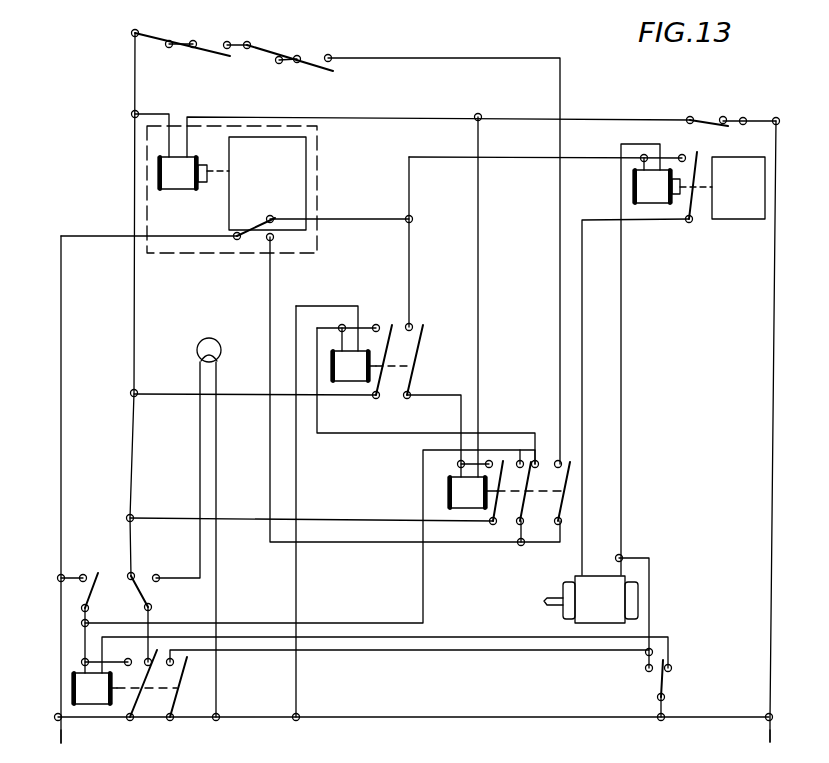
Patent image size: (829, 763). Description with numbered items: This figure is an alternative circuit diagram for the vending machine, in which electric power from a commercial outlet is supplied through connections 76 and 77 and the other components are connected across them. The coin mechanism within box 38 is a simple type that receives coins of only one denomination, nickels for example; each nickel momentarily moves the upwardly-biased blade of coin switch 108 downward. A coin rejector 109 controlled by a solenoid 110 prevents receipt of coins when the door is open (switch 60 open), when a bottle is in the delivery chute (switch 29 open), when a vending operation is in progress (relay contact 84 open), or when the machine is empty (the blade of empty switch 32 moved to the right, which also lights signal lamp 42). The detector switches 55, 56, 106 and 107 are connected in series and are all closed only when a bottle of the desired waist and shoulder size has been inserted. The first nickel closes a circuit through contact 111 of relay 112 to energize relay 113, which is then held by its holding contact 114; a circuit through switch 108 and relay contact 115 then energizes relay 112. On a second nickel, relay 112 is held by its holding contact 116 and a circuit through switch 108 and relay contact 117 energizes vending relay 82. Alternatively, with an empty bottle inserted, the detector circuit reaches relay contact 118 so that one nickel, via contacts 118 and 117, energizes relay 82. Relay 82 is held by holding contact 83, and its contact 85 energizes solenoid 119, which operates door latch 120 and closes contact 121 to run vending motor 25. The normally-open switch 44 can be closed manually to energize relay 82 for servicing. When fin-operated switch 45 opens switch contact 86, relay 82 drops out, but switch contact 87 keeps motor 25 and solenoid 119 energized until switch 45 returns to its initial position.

The detector switch 56 is at (163, 42).
The detector switch 55 is at (212, 44).
The detector switch 107 is at (268, 49).
The detector switch 106 is at (311, 60).
The box 38 is at (318, 198).
The solenoid 110 is at (182, 185).
The coin rejector 109 is at (297, 153).
The coin switch 108 is at (263, 226).
The switch 29 is at (716, 117).
The switch 60 is at (762, 116).
The solenoid 119 is at (657, 201).
The contact 121 is at (683, 151).
The door latch 120 is at (734, 220).
The relay 113 is at (352, 379).
The holding contact 114 is at (376, 323).
The relay contact 115 is at (412, 323).
The relay 112 is at (467, 507).
The holding contact 116 is at (487, 460).
The relay contact 117 is at (520, 450).
The contact 111 is at (536, 461).
The relay contact 118 is at (559, 461).
The signal lamp 42 is at (213, 344).
The switch 44 is at (96, 587).
The empty switch 32 is at (144, 591).
The vending relay 82 is at (92, 705).
The holding contact 83 is at (128, 658).
The relay contact 84 is at (150, 658).
The relay contact 85 is at (174, 666).
The connection 76 is at (55, 741).
The connection 77 is at (774, 730).
The vending motor 25 is at (582, 618).
The switch contact 86 is at (672, 667).
The switch contact 87 is at (645, 670).
The switch 45 is at (665, 684).